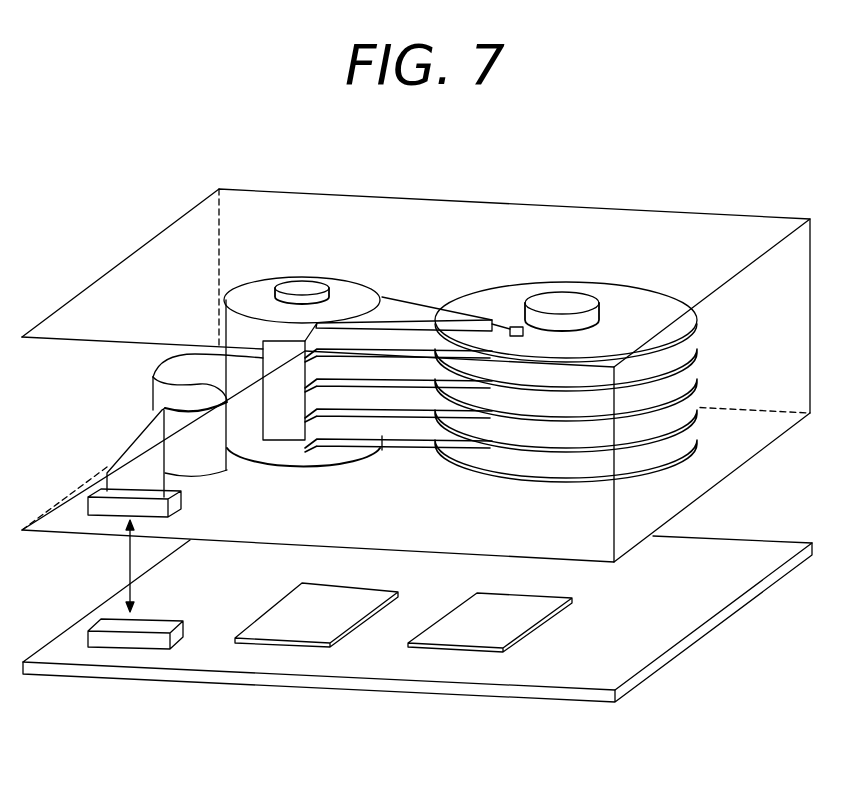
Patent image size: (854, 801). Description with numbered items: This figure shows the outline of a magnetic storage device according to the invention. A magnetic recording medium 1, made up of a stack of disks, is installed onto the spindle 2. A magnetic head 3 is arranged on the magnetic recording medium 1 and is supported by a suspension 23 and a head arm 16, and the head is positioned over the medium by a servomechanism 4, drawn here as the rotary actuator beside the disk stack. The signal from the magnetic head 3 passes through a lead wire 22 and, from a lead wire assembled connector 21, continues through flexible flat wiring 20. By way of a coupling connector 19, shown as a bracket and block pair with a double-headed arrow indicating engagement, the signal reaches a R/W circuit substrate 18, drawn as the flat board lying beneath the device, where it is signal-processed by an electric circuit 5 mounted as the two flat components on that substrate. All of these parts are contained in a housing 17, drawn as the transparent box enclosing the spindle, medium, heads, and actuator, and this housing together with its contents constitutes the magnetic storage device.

The magnetic recording medium 1 is at (635, 303).
The spindle 2 is at (566, 303).
The magnetic head 3 is at (578, 243).
The servomechanism 4 is at (267, 287).
The electric circuit 5 is at (465, 635).
The head arm 16 is at (397, 310).
The housing 17 is at (430, 198).
The R/W circuit substrate 18 is at (565, 700).
The coupling connector 19 is at (88, 500).
The flexible flat wiring 20 is at (215, 470).
The lead wire assembled connector 21 is at (285, 433).
The lead wire 22 is at (410, 450).
The suspension 23 is at (513, 327).